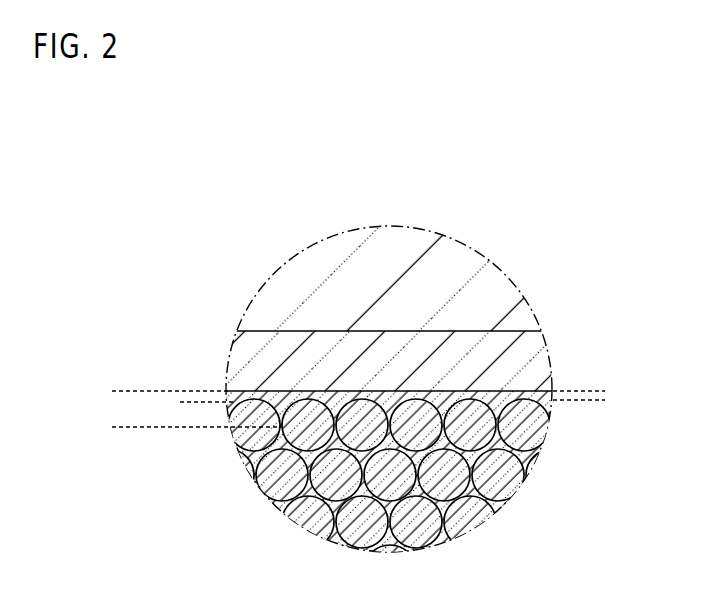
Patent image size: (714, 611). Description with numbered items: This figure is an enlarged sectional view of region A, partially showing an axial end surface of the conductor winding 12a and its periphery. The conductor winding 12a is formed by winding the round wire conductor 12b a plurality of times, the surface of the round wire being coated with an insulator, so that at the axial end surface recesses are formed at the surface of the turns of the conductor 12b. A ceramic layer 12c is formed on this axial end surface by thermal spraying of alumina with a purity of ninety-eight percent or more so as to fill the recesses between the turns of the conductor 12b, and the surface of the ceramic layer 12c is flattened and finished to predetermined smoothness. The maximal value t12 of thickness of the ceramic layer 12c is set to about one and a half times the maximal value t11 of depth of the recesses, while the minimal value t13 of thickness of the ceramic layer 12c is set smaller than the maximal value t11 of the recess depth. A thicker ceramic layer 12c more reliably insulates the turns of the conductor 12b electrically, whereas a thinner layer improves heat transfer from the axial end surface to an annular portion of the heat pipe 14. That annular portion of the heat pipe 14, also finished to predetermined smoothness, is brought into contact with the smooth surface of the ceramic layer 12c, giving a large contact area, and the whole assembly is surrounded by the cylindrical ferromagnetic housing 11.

The region A is at (300, 253).
The housing 11 is at (455, 265).
The heat pipe 14 is at (470, 333).
The conductor winding 12a is at (432, 459).
The round wire conductor 12b is at (538, 432).
The ceramic layer 12c is at (497, 392).
The maximal value of depth of the recesses t11 is at (185, 402).
The maximal value of thickness of the ceramic layer t12 is at (118, 391).
The minimal value of thickness of the ceramic layer t13 is at (595, 377).